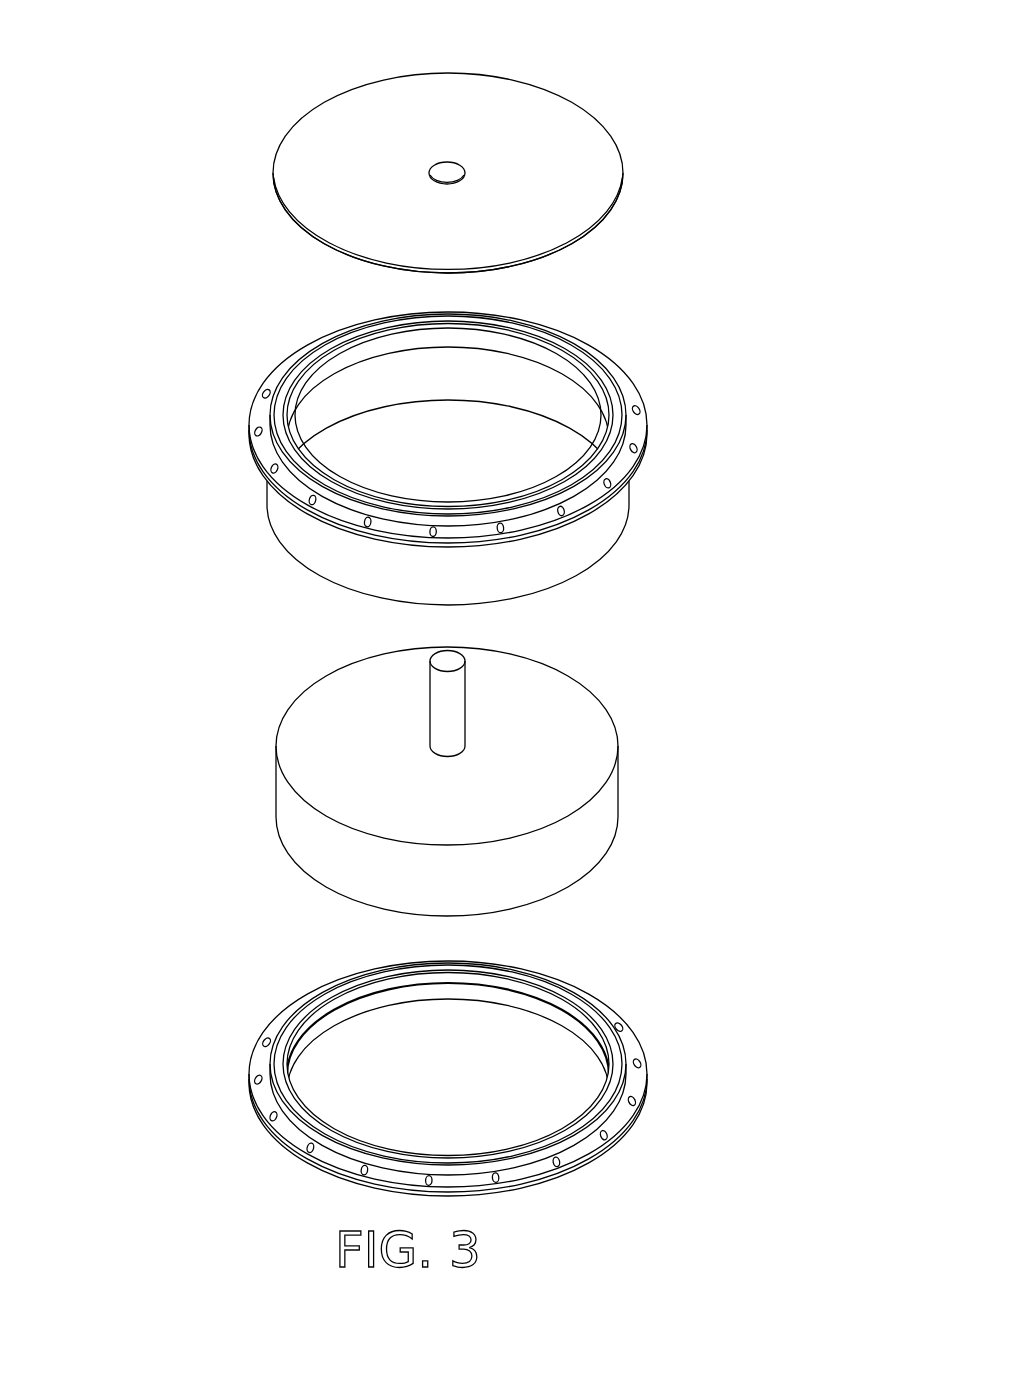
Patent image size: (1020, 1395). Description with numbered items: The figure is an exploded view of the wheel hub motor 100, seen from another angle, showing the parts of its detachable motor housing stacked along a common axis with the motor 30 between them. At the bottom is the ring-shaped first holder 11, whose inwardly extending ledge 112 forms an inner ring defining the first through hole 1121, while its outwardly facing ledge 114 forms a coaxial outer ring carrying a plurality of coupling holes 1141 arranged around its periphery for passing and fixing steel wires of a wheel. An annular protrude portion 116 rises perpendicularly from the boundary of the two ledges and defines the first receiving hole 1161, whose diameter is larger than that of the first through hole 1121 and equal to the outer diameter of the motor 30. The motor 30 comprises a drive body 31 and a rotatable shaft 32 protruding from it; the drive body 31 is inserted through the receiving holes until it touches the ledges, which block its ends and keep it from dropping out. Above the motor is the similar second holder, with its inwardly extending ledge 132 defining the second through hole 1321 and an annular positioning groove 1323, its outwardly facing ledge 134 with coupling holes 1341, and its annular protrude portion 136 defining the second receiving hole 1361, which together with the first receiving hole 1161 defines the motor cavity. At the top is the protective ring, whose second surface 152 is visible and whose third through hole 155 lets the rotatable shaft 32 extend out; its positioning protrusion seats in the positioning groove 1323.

The wheel hub motor 100 is at (183, 40).
The second surface 152 is at (482, 173).
The third through hole 155 is at (454, 168).
The inwardly extending ledge 132 is at (428, 422).
The second through hole 1321 is at (541, 380).
The annular positioning groove 1323 is at (278, 416).
The outwardly facing ledge 134 is at (490, 429).
The coupling holes 1341 is at (576, 518).
The annular protrude portion 136 is at (432, 472).
The second receiving hole 1361 is at (388, 428).
The motor 30 is at (514, 781).
The drive body 31 is at (598, 817).
The rotatable shaft 32 is at (452, 710).
The first holder 11 is at (503, 1082).
The inwardly extending ledge 112 is at (506, 1072).
The first through hole 1121 is at (541, 1023).
The outwardly facing ledge 114 is at (496, 1082).
The coupling holes 1141 is at (558, 1164).
The annular protrude portion 116 is at (481, 1067).
The first receiving hole 1161 is at (319, 1004).